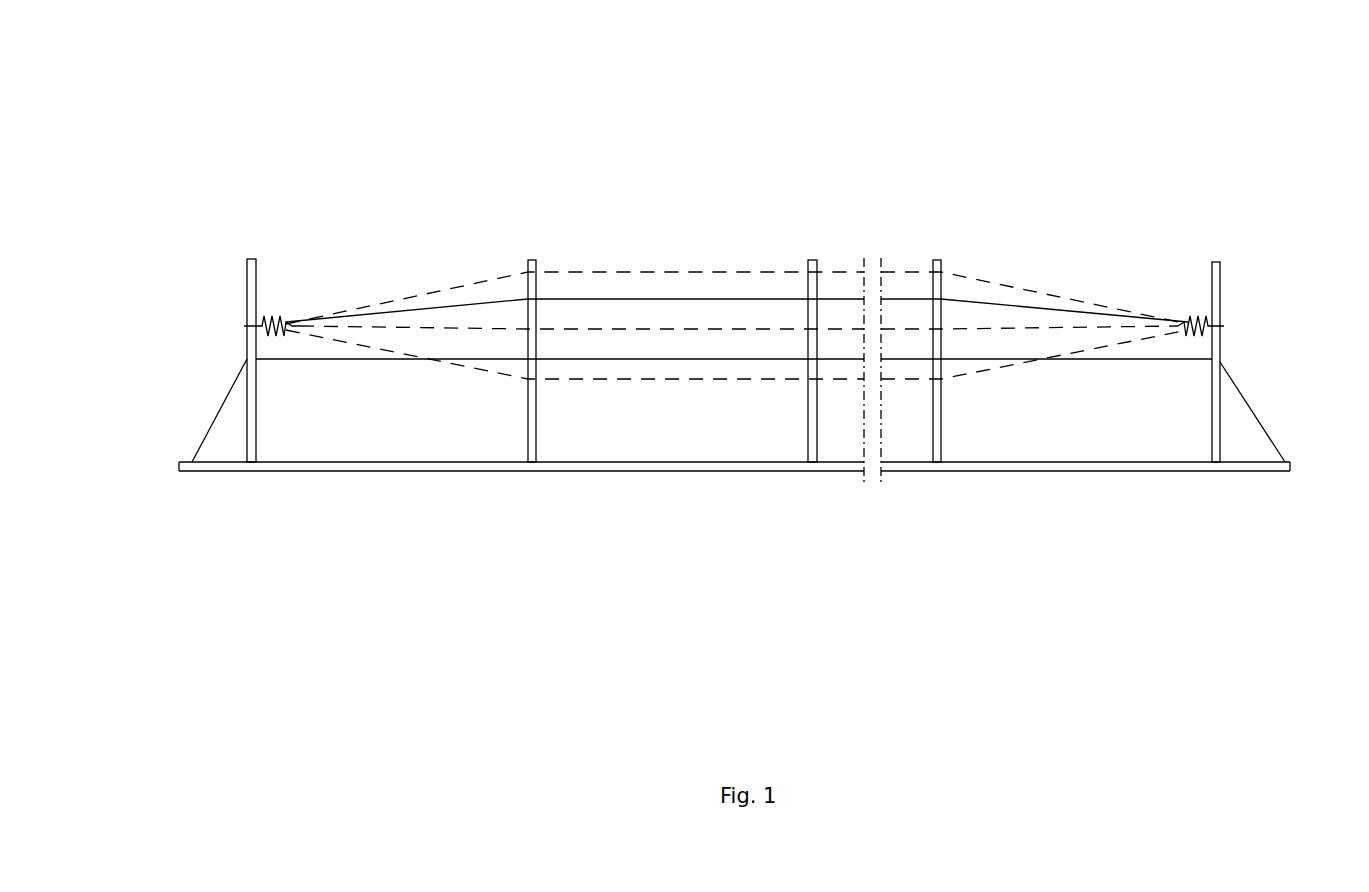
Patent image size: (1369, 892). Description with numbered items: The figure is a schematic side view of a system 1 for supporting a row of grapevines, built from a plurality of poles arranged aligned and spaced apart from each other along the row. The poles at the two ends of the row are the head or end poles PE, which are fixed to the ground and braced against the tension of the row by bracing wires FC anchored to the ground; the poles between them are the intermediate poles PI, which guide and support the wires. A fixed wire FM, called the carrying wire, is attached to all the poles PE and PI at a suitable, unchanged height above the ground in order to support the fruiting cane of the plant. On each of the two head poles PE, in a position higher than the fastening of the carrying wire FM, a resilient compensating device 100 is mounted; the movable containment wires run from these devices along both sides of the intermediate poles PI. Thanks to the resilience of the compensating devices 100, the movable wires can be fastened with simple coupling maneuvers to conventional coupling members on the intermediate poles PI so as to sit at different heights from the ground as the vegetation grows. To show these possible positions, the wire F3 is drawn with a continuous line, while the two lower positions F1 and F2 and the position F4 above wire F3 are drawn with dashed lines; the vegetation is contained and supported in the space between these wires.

The system for supporting plants in a row 1 is at (1079, 202).
The resilient compensating device 100 is at (272, 313).
The end pole PE is at (256, 437).
The intermediate pole PI is at (527, 398).
The bracing wire FC is at (222, 403).
The movable wire position F1 is at (620, 272).
The movable wire position F2 is at (536, 329).
The movable wire F3 is at (745, 299).
The movable wire position F4 is at (610, 380).
The fixed wire FM is at (633, 360).